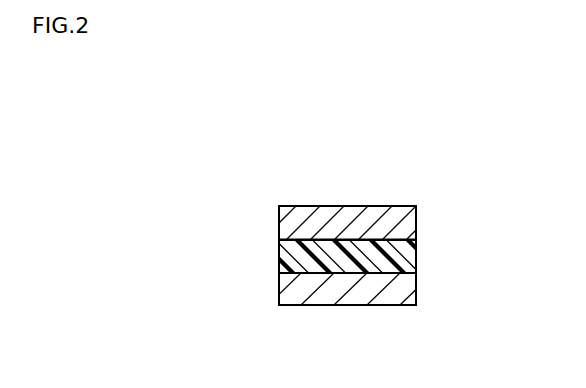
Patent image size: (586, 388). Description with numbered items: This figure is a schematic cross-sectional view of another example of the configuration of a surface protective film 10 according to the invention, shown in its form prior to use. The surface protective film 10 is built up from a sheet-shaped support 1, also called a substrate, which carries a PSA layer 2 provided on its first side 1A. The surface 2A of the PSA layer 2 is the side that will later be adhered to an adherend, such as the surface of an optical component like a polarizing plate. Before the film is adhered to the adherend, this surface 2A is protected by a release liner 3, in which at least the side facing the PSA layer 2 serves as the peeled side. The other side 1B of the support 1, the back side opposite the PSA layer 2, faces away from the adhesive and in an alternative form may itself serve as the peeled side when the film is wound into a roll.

The surface protective film 10 is at (292, 325).
The support 1 is at (417, 286).
The first side 1A is at (300, 273).
The other side 1B is at (368, 305).
The PSA layer 2 is at (417, 250).
The surface 2A is at (305, 240).
The release liner 3 is at (417, 215).